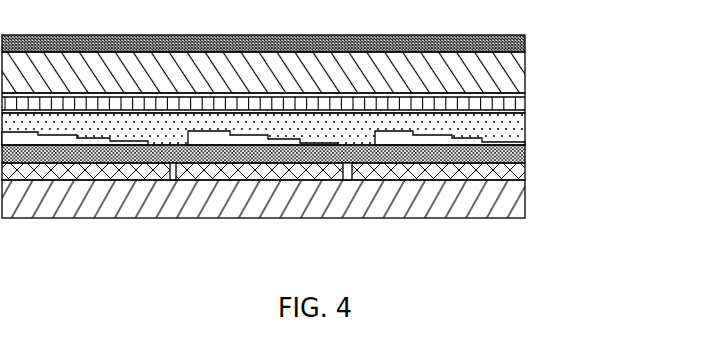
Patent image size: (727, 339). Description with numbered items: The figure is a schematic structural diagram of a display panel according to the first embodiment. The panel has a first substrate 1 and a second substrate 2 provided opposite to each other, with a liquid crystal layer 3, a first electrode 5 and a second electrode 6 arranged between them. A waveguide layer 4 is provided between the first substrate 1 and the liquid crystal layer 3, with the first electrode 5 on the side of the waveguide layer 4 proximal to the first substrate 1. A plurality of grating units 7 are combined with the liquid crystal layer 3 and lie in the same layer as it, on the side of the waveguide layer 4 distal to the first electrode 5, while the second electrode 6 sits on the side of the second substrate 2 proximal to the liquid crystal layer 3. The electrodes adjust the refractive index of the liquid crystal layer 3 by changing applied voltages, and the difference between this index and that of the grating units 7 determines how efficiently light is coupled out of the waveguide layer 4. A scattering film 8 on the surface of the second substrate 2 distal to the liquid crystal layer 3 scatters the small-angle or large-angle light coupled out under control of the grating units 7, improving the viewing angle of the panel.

The first substrate 1 is at (490, 198).
The second substrate 2 is at (483, 75).
The liquid crystal layer 3 is at (495, 123).
The waveguide layer 4 is at (523, 152).
The first electrode 5 is at (503, 167).
The second electrode 6 is at (480, 102).
The grating units 7 is at (388, 133).
The scattering film 8 is at (520, 36).